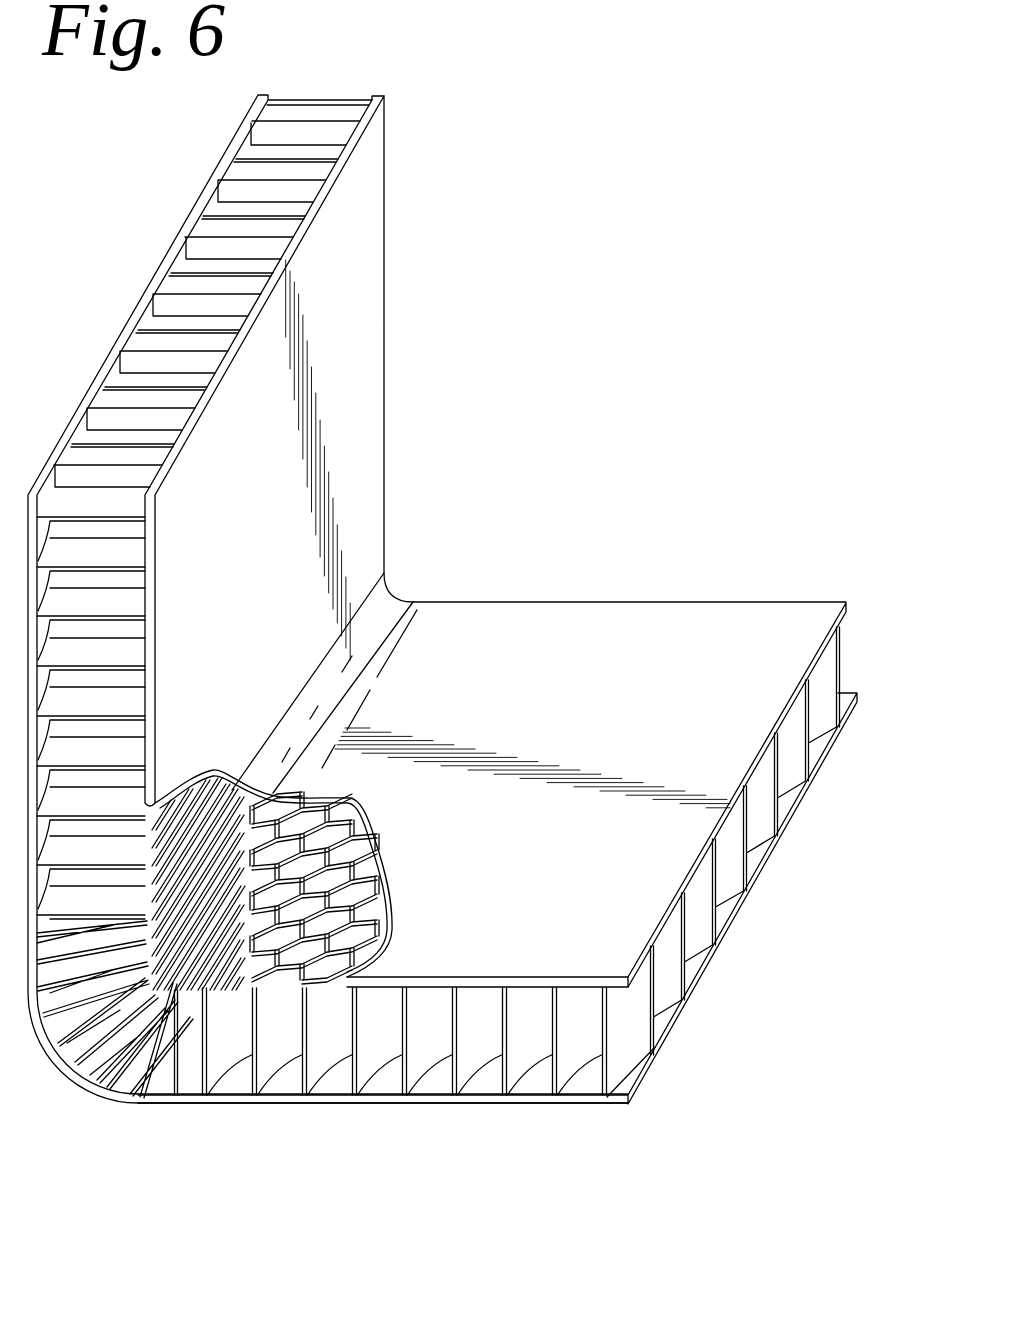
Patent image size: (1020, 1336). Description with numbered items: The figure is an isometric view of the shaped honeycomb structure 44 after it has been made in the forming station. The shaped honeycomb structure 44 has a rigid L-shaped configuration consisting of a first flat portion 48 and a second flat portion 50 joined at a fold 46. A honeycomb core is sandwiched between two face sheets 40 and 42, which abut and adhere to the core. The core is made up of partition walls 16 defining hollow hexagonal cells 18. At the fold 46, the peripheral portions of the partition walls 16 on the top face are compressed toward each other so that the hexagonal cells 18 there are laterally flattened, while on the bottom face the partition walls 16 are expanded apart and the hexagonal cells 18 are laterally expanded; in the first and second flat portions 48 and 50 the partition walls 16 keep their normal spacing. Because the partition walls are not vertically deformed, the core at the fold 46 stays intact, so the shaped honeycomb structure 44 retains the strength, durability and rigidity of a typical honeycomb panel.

The partition walls 16 is at (840, 652).
The hexagonal cells 18 is at (178, 1000).
The face sheet 40 is at (775, 625).
The face sheet 42 is at (808, 793).
The shaped honeycomb structure 44 is at (553, 410).
The fold 46 is at (418, 538).
The first flat portion 48 is at (243, 639).
The second flat portion 50 is at (493, 862).